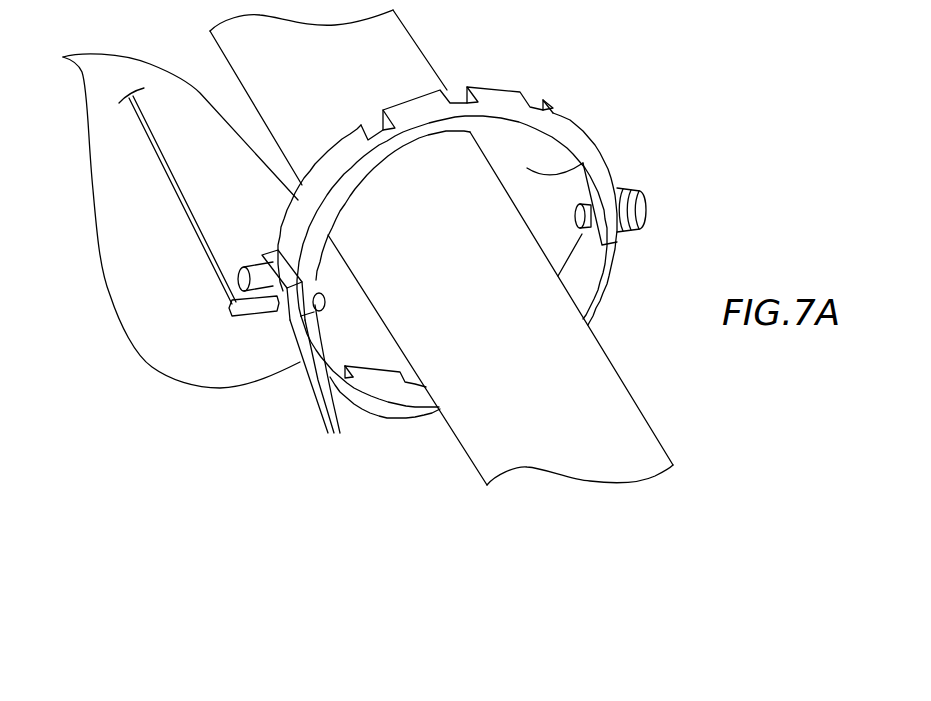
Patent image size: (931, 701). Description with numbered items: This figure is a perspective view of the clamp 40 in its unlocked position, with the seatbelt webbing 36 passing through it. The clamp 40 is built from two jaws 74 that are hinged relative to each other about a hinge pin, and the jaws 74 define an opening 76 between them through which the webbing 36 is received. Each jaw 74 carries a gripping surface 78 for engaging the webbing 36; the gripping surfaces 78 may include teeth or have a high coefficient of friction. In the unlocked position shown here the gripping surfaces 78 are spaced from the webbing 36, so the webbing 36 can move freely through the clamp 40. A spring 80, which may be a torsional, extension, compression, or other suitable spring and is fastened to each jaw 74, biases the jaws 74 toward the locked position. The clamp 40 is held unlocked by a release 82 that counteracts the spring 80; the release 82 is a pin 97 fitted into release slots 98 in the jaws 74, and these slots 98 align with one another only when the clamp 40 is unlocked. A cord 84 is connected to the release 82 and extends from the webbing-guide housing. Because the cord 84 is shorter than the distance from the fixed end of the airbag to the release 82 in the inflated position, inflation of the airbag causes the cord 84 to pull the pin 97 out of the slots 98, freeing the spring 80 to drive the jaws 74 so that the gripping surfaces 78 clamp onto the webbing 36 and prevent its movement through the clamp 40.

The webbing 36 is at (650, 427).
The clamp 40 is at (577, 118).
The jaws 74 is at (66, 58).
The opening 76 is at (583, 163).
The gripping surface 78 is at (488, 84).
The spring 80 is at (628, 230).
The release 82 is at (248, 320).
The cord 84 is at (176, 184).
The pin 97 is at (230, 308).
The release slots 98 is at (333, 434).